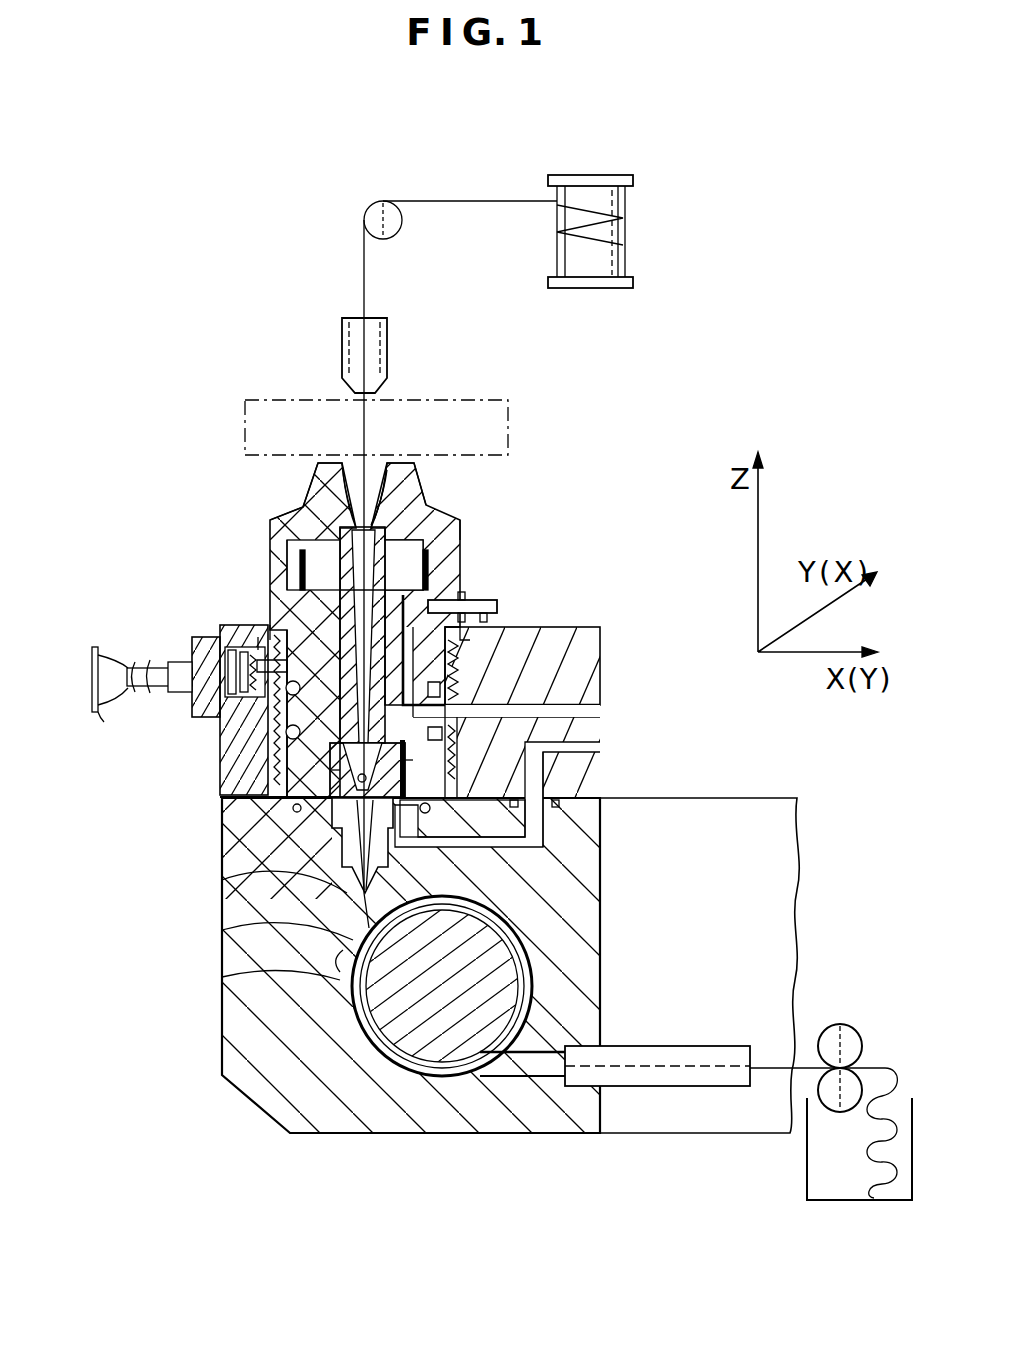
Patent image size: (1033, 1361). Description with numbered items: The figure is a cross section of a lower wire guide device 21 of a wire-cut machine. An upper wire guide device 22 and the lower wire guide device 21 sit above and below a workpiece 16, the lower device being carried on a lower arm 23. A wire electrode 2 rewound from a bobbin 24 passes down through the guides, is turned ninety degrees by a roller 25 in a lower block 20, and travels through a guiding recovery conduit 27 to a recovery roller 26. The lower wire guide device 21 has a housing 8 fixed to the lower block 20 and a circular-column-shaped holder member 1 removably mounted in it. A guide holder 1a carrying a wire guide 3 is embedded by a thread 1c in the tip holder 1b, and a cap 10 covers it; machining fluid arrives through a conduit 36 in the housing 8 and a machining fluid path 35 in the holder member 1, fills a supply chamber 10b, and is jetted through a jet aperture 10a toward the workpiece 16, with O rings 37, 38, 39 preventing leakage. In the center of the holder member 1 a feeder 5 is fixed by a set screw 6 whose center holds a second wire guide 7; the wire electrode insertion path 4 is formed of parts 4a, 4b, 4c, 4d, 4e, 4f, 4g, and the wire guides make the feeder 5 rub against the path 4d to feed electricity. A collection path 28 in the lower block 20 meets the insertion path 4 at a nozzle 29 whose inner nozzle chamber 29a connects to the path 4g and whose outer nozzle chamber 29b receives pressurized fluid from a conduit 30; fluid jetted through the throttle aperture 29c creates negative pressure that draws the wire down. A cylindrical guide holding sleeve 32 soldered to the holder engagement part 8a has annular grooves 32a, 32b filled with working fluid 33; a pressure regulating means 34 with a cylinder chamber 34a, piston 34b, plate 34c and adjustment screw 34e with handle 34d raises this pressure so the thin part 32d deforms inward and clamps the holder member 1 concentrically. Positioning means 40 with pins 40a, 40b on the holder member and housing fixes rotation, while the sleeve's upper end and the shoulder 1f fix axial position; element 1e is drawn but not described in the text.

The holder member 1 is at (268, 600).
The guide holder 1a is at (461, 521).
The holder 1b is at (290, 577).
The thread 1c is at (313, 565).
The flange portion 1e is at (447, 548).
The shoulder 1f is at (271, 623).
The wire electrode 2 is at (466, 201).
The wire guide 3 is at (313, 500).
The wire electrode insertion path 4 is at (290, 550).
The path part 4a is at (338, 462).
The path part 4b is at (406, 565).
The path part 4c is at (455, 688).
The path part 4d is at (367, 734).
The path part 4e is at (450, 769).
The path part 4f is at (418, 818).
The path part 4g is at (385, 860).
The feeder 5 is at (227, 757).
The set screw 6 is at (462, 818).
The second wire guide 7 is at (225, 813).
The housing 8 is at (585, 627).
The holder engagement part 8a is at (472, 695).
The cap 10 is at (437, 512).
The jet aperture 10a is at (376, 462).
The supply chamber 10b is at (382, 507).
The workpiece 16 is at (512, 445).
The lower block 20 is at (543, 1134).
The lower wire guide device 21 is at (270, 512).
The upper wire guide device 22 is at (386, 338).
The lower arm 23 is at (742, 798).
The bobbin 24 is at (602, 287).
The roller 25 is at (410, 1076).
The recovery roller 26 is at (843, 1022).
The guiding recovery conduit 27 is at (683, 1087).
The collection path 28 is at (340, 972).
The nozzle 29 is at (277, 849).
The inner nozzle chamber 29a is at (240, 888).
The outer nozzle chamber 29b is at (248, 936).
The throttle aperture 29c is at (252, 972).
The conduit 30 is at (565, 745).
The guide holding sleeve 32 is at (222, 718).
The annular groove 32a is at (291, 662).
The annular groove 32b is at (317, 772).
The thin part 32d is at (268, 722).
The working fluid 33 is at (227, 788).
The pressure regulating means 34 is at (97, 650).
The cylinder chamber 34a is at (258, 637).
The piston 34b is at (210, 640).
The plate 34c is at (185, 662).
The handle 34d is at (103, 722).
The adjustment screw 34e is at (165, 668).
The machining fluid path 35 is at (507, 630).
The conduit 36 is at (590, 715).
The O ring 37 is at (470, 672).
The O ring 38 is at (294, 812).
The O ring 39 is at (565, 808).
The positioning means 40 is at (498, 608).
The positioning pin 40a is at (465, 600).
The positioning pin 40b is at (488, 603).